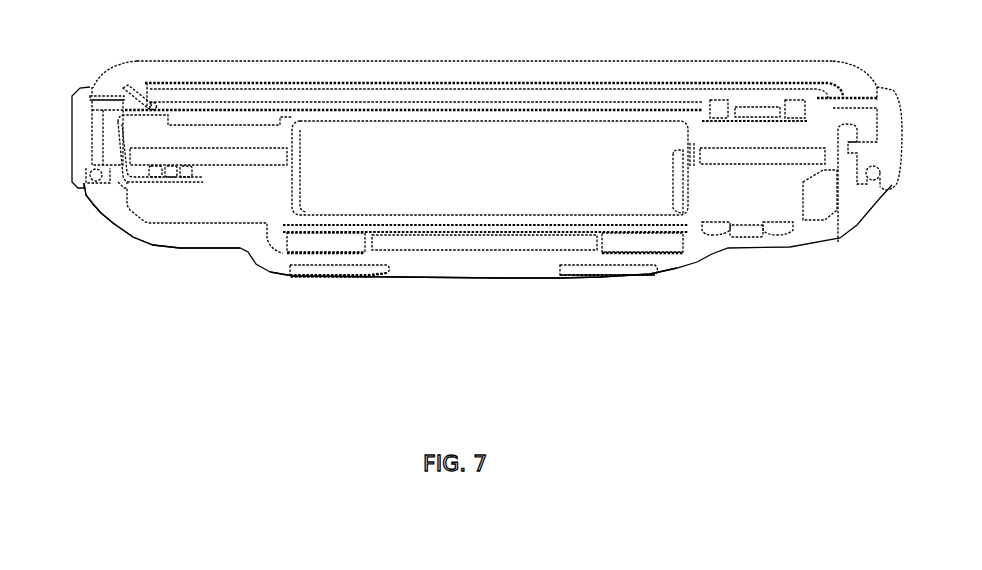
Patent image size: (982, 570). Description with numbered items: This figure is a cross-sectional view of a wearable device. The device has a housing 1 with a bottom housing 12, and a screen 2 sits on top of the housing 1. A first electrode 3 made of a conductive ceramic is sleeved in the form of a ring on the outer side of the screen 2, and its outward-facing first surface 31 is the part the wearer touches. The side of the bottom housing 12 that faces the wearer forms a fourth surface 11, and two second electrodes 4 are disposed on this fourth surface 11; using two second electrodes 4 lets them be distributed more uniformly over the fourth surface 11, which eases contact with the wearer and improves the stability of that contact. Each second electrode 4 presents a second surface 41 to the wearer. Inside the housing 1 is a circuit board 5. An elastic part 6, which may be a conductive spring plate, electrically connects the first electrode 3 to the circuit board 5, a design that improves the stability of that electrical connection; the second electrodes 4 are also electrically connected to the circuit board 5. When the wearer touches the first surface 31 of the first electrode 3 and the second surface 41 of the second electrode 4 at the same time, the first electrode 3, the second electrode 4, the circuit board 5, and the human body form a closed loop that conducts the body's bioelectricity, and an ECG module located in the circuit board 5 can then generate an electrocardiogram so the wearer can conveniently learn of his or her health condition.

The housing 1 is at (252, 365).
The screen 2 is at (317, 68).
The first electrode 3 is at (82, 128).
The first surface 31 is at (92, 87).
The second electrode 4 is at (343, 277).
The second surface 41 is at (342, 278).
The circuit board 5 is at (205, 103).
The elastic part 6 is at (140, 92).
The fourth surface 11 is at (483, 280).
The bottom housing 12 is at (118, 210).